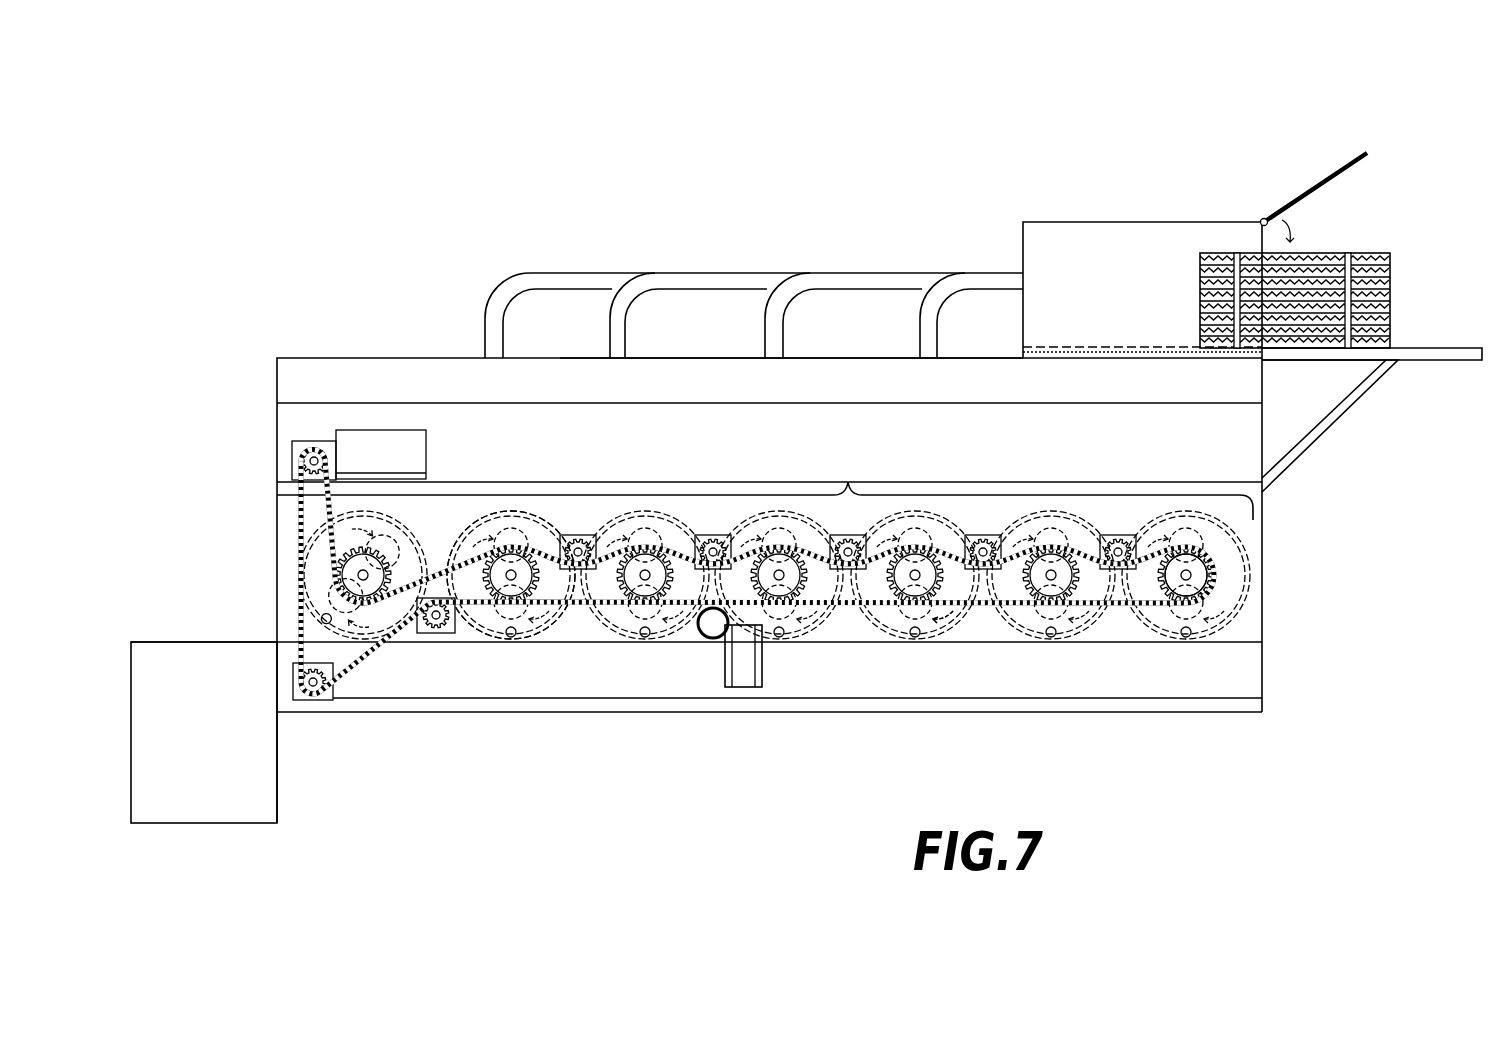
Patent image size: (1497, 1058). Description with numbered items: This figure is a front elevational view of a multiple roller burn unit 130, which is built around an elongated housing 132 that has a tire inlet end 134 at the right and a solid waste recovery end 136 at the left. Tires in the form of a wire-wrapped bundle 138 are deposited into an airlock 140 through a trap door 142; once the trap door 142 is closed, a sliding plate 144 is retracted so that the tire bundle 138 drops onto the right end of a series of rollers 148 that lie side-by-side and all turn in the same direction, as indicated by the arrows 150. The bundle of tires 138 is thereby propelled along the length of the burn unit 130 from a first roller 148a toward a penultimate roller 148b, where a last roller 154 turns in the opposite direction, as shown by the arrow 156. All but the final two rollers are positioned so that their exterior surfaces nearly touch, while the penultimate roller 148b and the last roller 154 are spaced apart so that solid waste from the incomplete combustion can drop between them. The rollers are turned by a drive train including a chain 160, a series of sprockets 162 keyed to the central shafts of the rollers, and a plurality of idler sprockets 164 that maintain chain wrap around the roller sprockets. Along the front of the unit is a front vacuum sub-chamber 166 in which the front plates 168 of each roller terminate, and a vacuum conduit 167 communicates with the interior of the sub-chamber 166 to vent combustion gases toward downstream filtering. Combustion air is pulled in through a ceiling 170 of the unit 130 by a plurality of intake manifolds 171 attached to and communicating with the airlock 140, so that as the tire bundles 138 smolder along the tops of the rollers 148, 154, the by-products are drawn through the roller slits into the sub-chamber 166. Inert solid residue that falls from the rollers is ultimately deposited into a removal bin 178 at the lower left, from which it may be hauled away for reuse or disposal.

The multiple roller burn unit 130 is at (376, 229).
The elongated housing 132 is at (290, 332).
The tire inlet end 134 is at (1226, 182).
The solid waste recovery end 136 is at (240, 545).
The wire-wrapped bundle 138 is at (1390, 273).
The airlock 140 is at (1038, 221).
The trap door 142 is at (1356, 152).
The sliding plate 144 is at (1118, 355).
The rollers 148 is at (848, 482).
The first roller 148a is at (1243, 622).
The penultimate roller 148b is at (482, 636).
The arrows 150 is at (943, 618).
The last roller 154 is at (445, 522).
The arrow 156 is at (377, 534).
The chain 160 is at (300, 617).
The sprockets 162 is at (1155, 593).
The idler sprockets 164 is at (1125, 535).
The front vacuum sub-chamber 166 is at (645, 482).
The vacuum conduit 167 is at (703, 640).
The front plates 168 is at (938, 532).
The ceiling 170 is at (672, 358).
The intake manifolds 171 is at (556, 273).
The removal bin 178 is at (277, 780).